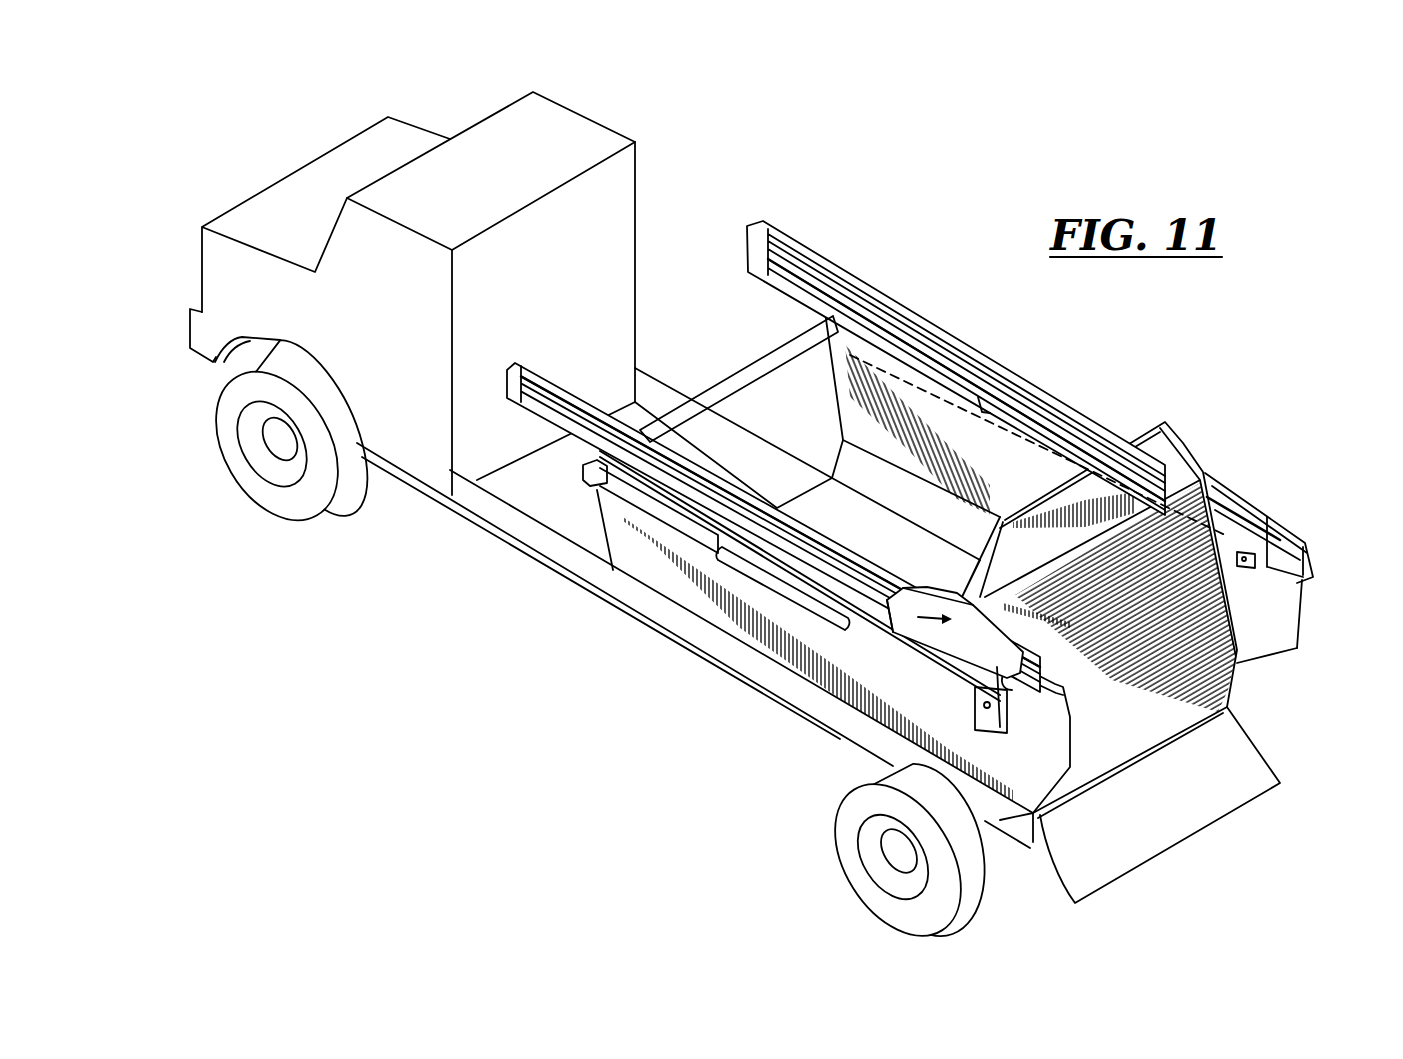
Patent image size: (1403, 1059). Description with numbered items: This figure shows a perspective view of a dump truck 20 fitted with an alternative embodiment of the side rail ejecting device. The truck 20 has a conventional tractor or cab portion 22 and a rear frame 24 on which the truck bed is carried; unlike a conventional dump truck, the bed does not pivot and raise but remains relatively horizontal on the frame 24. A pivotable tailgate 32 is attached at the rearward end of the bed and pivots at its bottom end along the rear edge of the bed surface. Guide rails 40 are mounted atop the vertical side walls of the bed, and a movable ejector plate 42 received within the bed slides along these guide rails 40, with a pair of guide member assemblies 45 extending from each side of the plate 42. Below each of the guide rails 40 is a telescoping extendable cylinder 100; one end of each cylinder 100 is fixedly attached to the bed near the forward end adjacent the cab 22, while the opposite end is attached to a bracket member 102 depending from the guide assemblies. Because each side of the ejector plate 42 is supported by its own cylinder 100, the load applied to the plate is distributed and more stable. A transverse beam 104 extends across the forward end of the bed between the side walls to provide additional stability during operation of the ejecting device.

The dump truck 20 is at (713, 152).
The tractor or cab portion 22 is at (540, 127).
The rear frame 24 is at (530, 528).
The tailgate 32 is at (1242, 750).
The guide rails 40 is at (530, 378).
The ejector plate 42 is at (1188, 442).
The guide member assemblies 45 is at (890, 627).
The telescoping extendable cylinder 100 is at (900, 365).
The bracket member 102 is at (1300, 517).
The transverse beam 104 is at (737, 370).